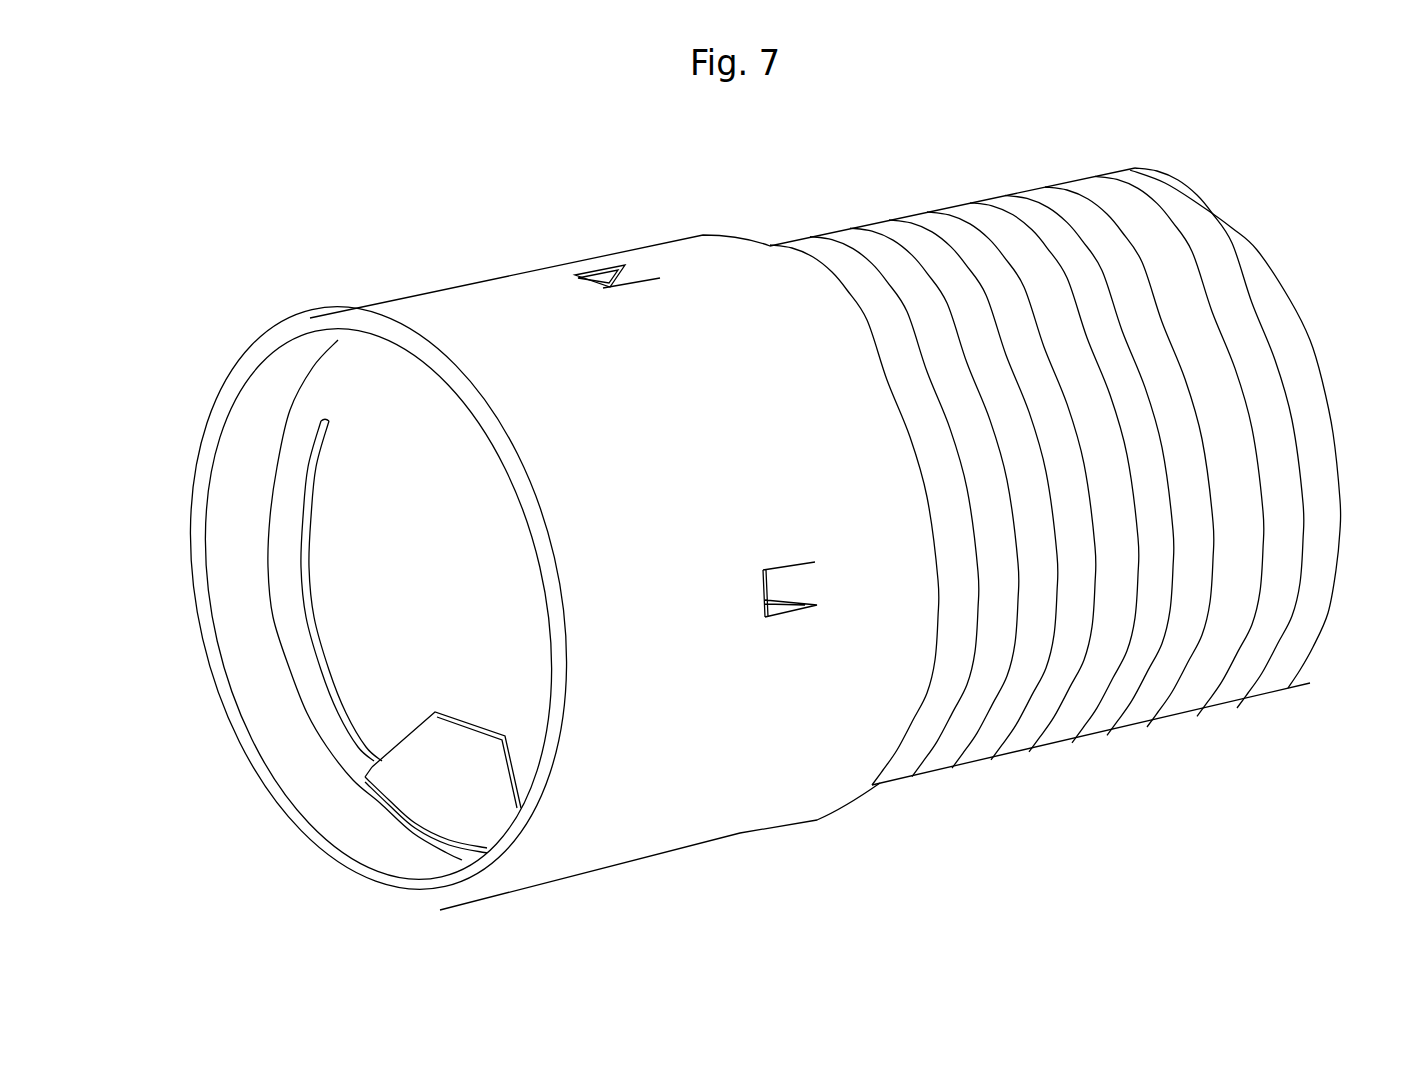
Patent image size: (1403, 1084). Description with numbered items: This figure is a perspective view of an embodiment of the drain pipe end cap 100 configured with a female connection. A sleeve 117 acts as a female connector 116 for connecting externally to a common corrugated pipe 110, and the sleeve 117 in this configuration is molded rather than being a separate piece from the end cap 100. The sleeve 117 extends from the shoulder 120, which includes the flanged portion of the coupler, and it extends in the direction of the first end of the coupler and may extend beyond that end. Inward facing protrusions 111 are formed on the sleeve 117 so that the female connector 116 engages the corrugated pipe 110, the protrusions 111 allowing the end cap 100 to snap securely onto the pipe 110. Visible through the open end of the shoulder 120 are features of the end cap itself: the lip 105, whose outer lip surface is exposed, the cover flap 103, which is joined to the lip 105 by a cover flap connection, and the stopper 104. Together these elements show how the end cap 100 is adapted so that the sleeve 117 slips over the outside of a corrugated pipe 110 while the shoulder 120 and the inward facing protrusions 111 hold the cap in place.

The drain pipe end cap 100 is at (633, 903).
The cover flap 103 is at (403, 604).
The stopper 104 is at (424, 779).
The lip 105 is at (295, 504).
The corrugated pipe 110 is at (962, 278).
The protrusion 111 is at (632, 276).
The female connector 116 is at (941, 616).
The sleeve 117 is at (512, 330).
The shoulder 120 is at (313, 320).